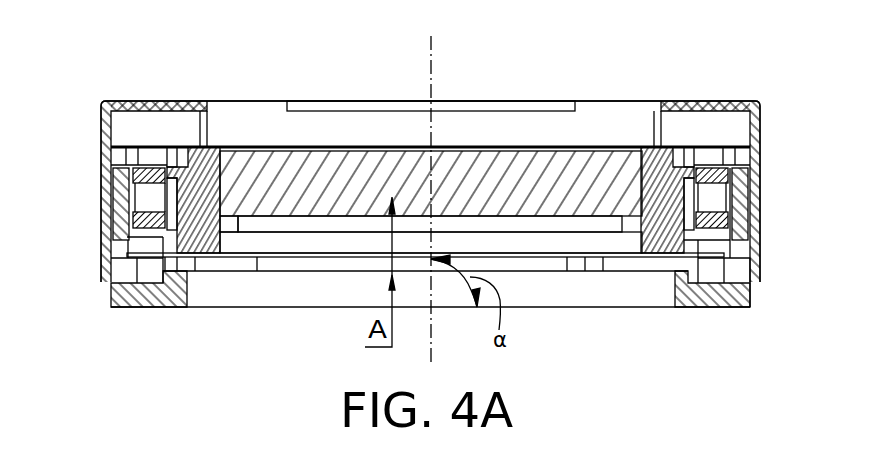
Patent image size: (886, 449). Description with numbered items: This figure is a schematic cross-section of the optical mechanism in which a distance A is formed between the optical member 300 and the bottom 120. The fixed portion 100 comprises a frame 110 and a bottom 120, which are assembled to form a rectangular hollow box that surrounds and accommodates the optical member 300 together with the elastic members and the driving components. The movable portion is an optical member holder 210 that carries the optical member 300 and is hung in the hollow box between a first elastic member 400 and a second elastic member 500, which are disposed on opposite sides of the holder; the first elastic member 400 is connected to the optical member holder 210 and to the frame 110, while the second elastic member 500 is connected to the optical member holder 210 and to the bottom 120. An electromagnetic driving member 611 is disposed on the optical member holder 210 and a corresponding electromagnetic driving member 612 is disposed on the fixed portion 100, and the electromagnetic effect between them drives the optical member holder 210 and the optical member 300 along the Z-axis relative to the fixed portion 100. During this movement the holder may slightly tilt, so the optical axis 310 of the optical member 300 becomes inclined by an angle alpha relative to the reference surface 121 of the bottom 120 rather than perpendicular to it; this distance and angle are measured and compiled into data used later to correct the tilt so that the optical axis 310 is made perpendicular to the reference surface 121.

The fixed portion 100 is at (757, 98).
The frame 110 is at (128, 103).
The first elastic member 400 is at (127, 146).
The optical member holder 210 is at (184, 163).
The optical member 300 is at (262, 165).
The optical axis 310 is at (430, 186).
The electromagnetic driving member 612 is at (118, 183).
The electromagnetic driving member 611 is at (135, 220).
The second elastic member 500 is at (127, 258).
The bottom 120 is at (120, 296).
The reference surface 121 is at (133, 306).